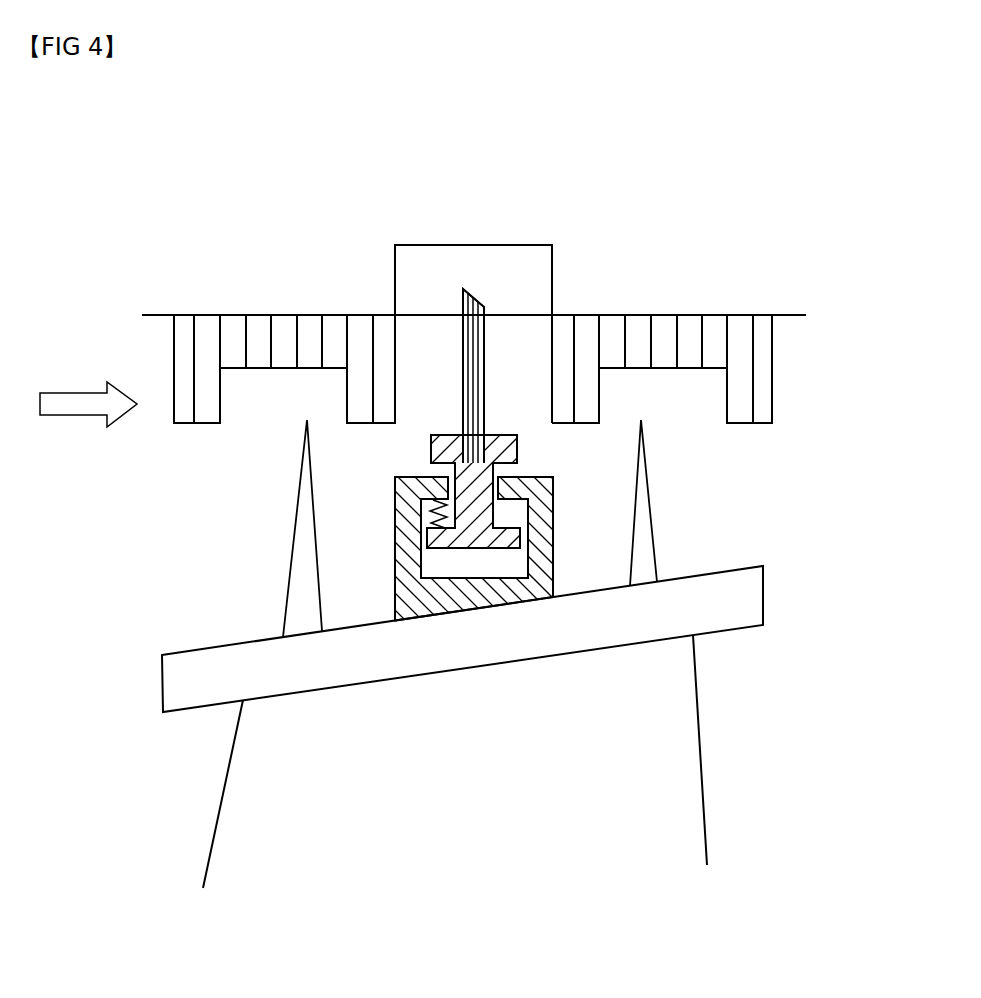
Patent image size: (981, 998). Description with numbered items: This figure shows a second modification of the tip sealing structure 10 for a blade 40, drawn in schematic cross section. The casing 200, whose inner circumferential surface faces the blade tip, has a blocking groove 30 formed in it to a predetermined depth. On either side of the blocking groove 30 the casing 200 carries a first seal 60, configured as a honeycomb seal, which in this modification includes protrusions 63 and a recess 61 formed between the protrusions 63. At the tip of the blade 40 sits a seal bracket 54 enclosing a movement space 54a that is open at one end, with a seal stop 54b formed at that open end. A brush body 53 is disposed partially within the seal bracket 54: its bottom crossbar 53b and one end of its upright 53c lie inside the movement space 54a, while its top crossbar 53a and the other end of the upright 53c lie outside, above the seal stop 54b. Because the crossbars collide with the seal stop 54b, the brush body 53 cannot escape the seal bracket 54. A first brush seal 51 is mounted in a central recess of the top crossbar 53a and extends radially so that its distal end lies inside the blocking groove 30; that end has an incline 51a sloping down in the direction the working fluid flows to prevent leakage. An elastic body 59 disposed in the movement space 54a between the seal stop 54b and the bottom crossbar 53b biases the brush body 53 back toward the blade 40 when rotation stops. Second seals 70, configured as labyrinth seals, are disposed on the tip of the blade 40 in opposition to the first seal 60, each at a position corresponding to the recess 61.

The tip sealing structure 10 is at (837, 179).
The casing 200 is at (266, 313).
The blocking groove 30 is at (470, 245).
The first seal 60 is at (551, 335).
The recess 61 is at (712, 368).
The protrusions 63 is at (762, 411).
The first brush seal 51 is at (658, 336).
The incline 51a is at (473, 297).
The brush body 53 is at (558, 485).
The top crossbar 53a is at (500, 447).
The upright 53c is at (473, 505).
The bottom crossbar 53b is at (507, 538).
The seal bracket 54 is at (446, 532).
The movement space 54a is at (437, 572).
The seal stop 54b is at (400, 477).
The elastic body 59 is at (433, 486).
The second seal 70 is at (648, 572).
The blade 40 is at (670, 742).